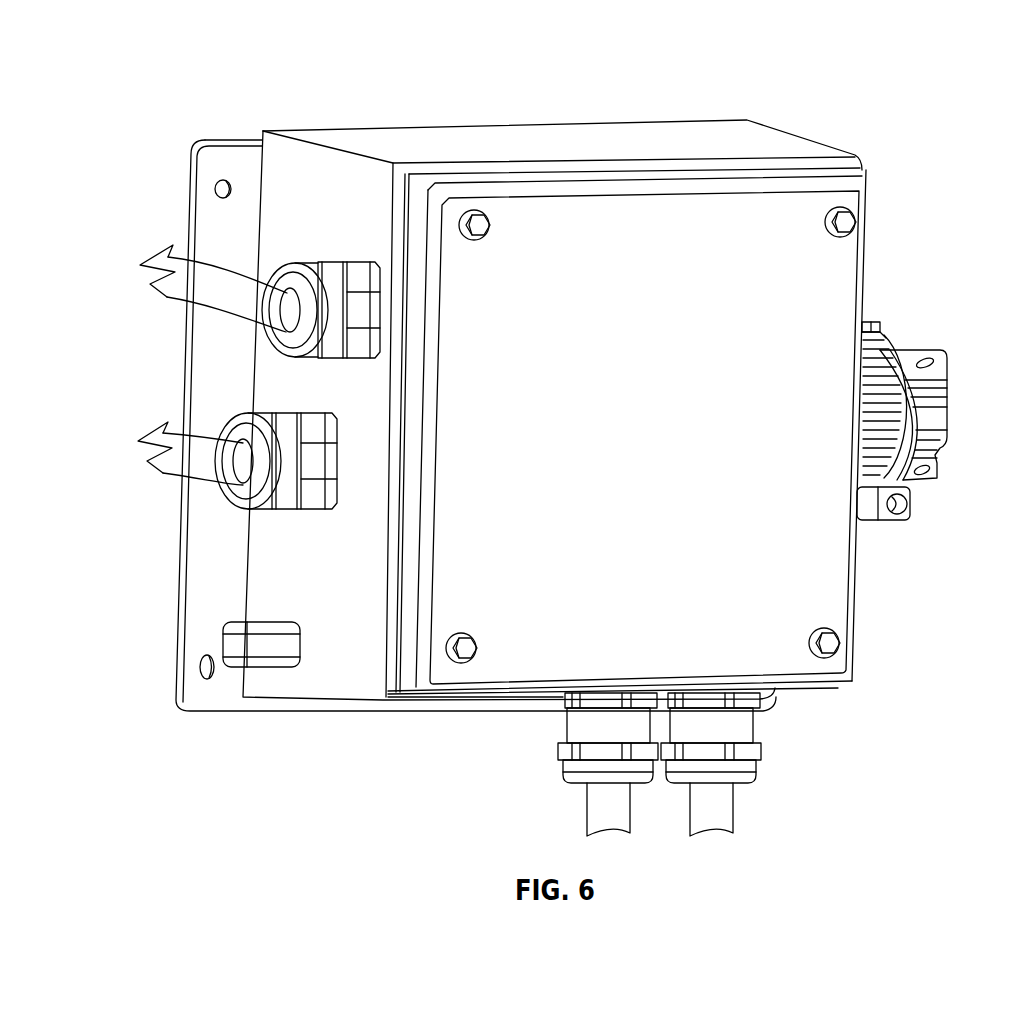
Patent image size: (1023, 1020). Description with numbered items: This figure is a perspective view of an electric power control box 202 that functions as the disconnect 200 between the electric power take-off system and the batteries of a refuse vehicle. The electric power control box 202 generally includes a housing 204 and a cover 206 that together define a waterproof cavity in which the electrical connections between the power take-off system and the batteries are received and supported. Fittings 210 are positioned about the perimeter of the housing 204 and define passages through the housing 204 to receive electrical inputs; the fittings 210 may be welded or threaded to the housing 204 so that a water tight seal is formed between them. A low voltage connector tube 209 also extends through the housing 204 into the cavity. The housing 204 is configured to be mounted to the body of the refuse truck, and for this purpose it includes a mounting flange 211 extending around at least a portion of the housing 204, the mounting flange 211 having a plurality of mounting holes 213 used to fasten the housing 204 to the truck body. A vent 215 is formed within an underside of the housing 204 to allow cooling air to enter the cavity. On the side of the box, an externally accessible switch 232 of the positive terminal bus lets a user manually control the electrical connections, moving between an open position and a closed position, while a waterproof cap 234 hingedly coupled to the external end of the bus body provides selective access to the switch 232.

The disconnect 200 is at (474, 78).
The electric power control box 202 is at (641, 88).
The housing 204 is at (777, 142).
The cover 206 is at (833, 597).
The low voltage connector tube 209 is at (205, 655).
The fittings 210 is at (320, 262).
The mounting flange 211 is at (194, 188).
The mounting holes 213 is at (215, 194).
The vent 215 is at (482, 692).
The switch 232 is at (880, 372).
The waterproof cap 234 is at (937, 357).